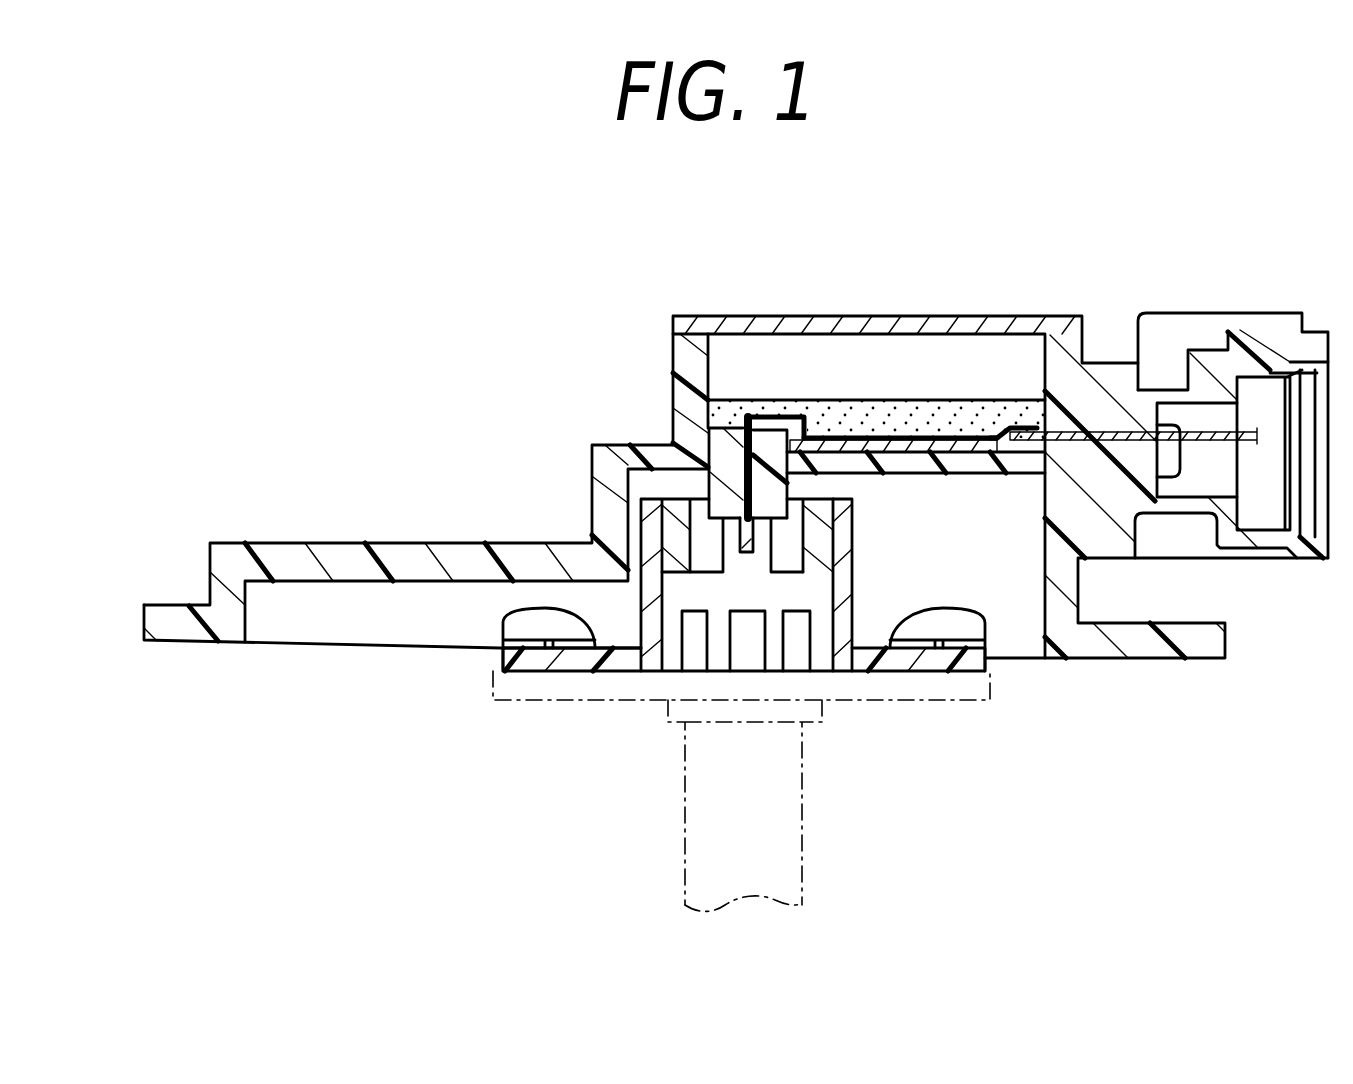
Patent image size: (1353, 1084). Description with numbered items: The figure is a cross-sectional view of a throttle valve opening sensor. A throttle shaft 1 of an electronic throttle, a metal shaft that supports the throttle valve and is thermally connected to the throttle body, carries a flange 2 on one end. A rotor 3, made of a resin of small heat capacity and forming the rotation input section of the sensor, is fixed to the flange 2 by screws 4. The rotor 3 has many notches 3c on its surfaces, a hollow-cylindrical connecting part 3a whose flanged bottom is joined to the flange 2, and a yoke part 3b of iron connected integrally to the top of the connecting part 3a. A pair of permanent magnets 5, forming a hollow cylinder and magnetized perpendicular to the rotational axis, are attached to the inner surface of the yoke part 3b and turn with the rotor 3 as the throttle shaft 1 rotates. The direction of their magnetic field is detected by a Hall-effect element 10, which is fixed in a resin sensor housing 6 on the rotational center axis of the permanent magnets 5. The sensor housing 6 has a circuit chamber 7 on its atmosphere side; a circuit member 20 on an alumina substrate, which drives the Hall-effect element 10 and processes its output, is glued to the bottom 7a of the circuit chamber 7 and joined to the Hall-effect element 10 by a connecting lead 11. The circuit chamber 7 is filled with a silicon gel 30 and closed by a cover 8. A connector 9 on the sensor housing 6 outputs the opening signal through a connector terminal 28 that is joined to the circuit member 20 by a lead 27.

The throttle shaft 1 is at (682, 868).
The flange 2 is at (538, 700).
The rotor 3 is at (866, 608).
The connecting part 3a is at (940, 673).
The yoke part 3b is at (855, 507).
The notches 3c is at (695, 673).
The screws 4 is at (503, 623).
The permanent magnets 5 is at (810, 563).
The sensor housing 6 is at (407, 553).
The circuit chamber 7 is at (948, 375).
The bottom of circuit chamber 7a is at (973, 465).
The cover 8 is at (855, 317).
The connector 9 is at (1258, 343).
The Hall-effect element 10 is at (743, 533).
The Hall-effect element connecting lead 11 is at (777, 417).
The circuit member 20 is at (957, 437).
The lead 27 is at (1010, 432).
The connector terminal 28 is at (1130, 437).
The silicon gel 30 is at (898, 400).